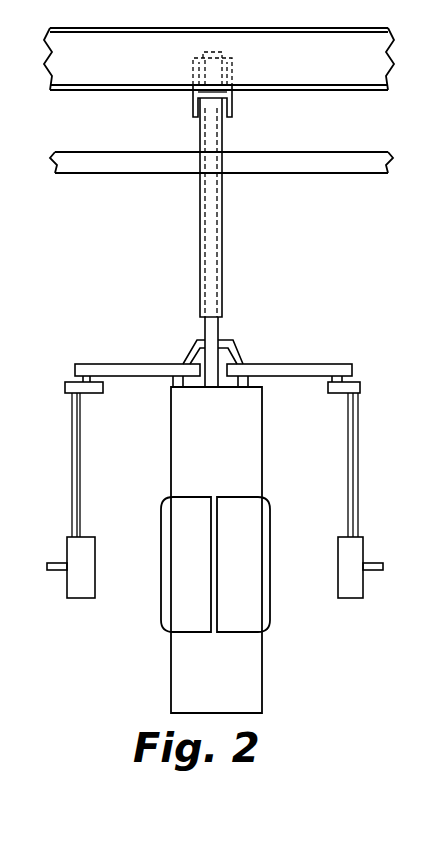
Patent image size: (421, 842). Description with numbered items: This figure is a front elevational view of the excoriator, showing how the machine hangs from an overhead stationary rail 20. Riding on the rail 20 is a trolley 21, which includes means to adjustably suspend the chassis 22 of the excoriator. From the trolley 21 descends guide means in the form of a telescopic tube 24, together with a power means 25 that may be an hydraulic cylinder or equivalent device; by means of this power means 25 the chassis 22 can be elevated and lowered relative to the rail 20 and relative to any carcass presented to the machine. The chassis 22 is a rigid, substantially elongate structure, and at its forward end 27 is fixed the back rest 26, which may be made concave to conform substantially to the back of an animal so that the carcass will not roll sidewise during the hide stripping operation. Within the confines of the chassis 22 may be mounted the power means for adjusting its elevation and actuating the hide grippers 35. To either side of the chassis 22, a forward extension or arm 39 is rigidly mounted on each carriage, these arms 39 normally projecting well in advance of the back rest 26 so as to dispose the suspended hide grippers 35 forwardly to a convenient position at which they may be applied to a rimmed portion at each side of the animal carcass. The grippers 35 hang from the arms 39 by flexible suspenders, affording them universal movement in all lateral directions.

The overhead stationary rail 20 is at (226, 55).
The trolley 21 is at (195, 100).
The chassis 22 is at (170, 473).
The telescopic tube 24 is at (213, 330).
The power means 25 is at (217, 142).
The back rest 26 is at (172, 604).
The forward end 27 is at (237, 466).
The hide grippers 35 is at (60, 571).
The forward extension or arm 39 is at (93, 393).